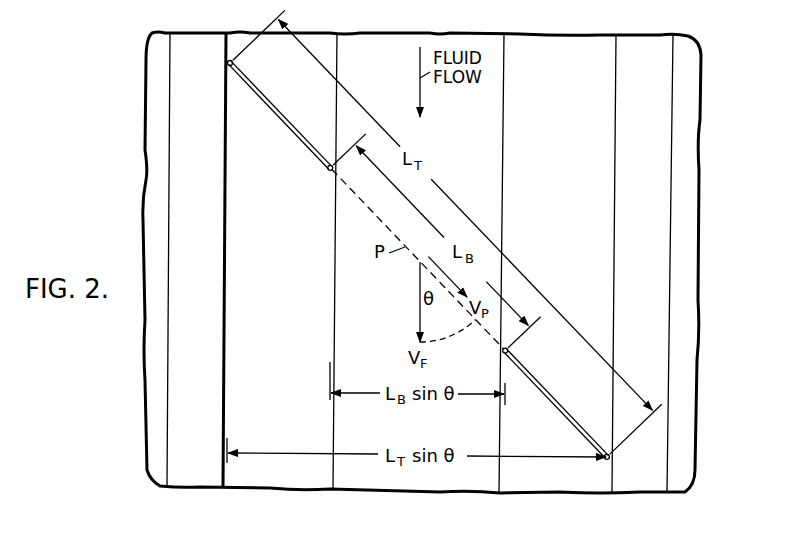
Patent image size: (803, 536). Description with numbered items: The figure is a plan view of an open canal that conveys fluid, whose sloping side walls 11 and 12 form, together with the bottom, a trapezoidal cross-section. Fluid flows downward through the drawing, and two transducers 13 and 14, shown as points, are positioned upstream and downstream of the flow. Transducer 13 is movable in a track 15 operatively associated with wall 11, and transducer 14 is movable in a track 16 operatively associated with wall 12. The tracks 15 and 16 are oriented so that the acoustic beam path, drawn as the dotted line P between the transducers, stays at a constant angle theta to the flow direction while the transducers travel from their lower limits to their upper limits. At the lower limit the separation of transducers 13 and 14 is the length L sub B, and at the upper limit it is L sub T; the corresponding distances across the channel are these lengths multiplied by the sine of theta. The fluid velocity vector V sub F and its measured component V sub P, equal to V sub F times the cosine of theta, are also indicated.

The sloping side wall 11 is at (265, 477).
The sloping side wall 12 is at (566, 482).
The transducer 13 is at (330, 170).
The transducer 14 is at (503, 352).
The track 15 is at (277, 118).
The track 16 is at (552, 397).